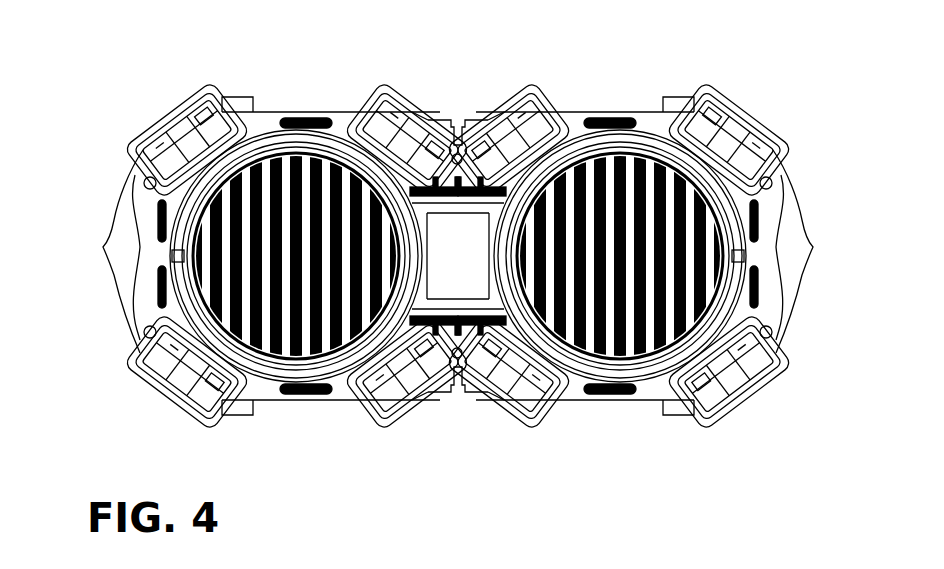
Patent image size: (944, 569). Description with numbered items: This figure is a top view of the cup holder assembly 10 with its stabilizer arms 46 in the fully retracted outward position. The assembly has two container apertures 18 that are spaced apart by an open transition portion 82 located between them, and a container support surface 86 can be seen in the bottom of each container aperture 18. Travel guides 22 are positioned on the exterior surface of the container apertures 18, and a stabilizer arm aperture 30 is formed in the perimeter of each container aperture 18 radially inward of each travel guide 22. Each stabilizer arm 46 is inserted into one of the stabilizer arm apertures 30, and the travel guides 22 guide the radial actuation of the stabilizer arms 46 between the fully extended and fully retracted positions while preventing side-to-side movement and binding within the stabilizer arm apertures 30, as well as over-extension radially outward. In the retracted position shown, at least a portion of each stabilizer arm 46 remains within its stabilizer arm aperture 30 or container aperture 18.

The cup holder assembly 10 is at (147, 78).
The container apertures 18 is at (272, 130).
The travel guides 22 is at (152, 118).
The stabilizer arm aperture 30 is at (242, 130).
The stabilizer arms 46 is at (400, 108).
The open transition portion 82 is at (446, 270).
The container support surface 86 is at (650, 197).